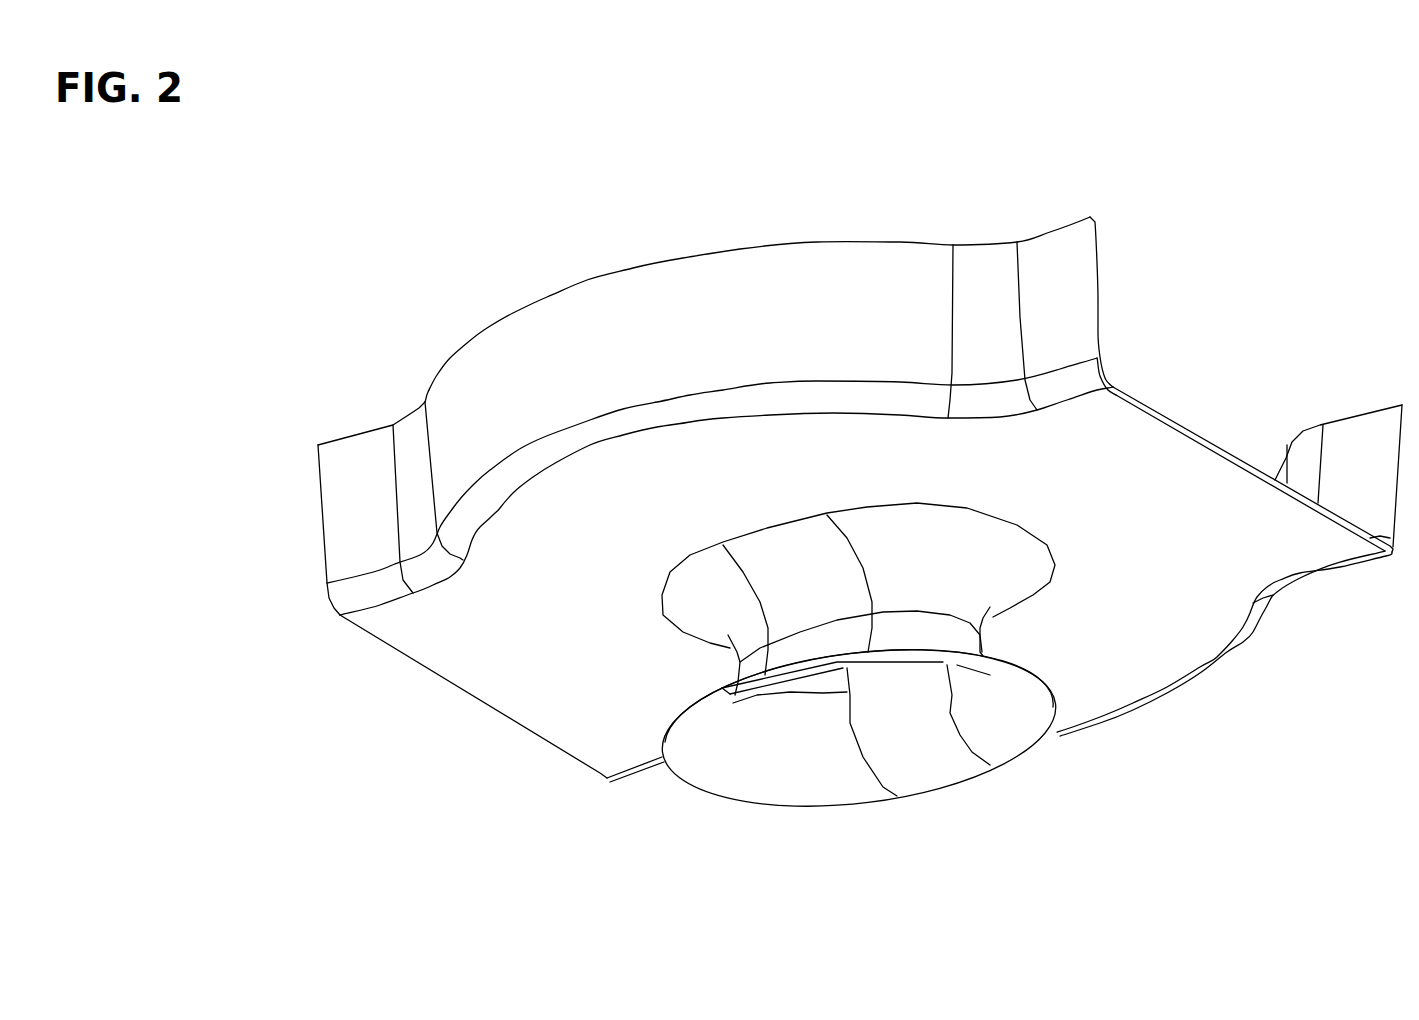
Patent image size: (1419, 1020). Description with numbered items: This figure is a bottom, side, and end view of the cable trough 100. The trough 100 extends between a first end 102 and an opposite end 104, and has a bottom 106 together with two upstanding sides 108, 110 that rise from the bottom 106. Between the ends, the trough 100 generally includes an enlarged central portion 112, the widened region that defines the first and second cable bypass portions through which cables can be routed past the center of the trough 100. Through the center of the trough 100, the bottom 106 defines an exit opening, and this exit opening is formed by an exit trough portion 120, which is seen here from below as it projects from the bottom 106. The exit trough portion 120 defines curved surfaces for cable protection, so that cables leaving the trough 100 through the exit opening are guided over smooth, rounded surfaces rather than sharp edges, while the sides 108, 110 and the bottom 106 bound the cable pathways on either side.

The trough 100 is at (640, 182).
The first end 102 is at (460, 690).
The opposite end 104 is at (1193, 432).
The bottom 106 is at (578, 636).
The side 108 is at (1358, 415).
The side 110 is at (660, 345).
The enlarged central portion 112 is at (740, 245).
The exit trough portion 120 is at (975, 772).